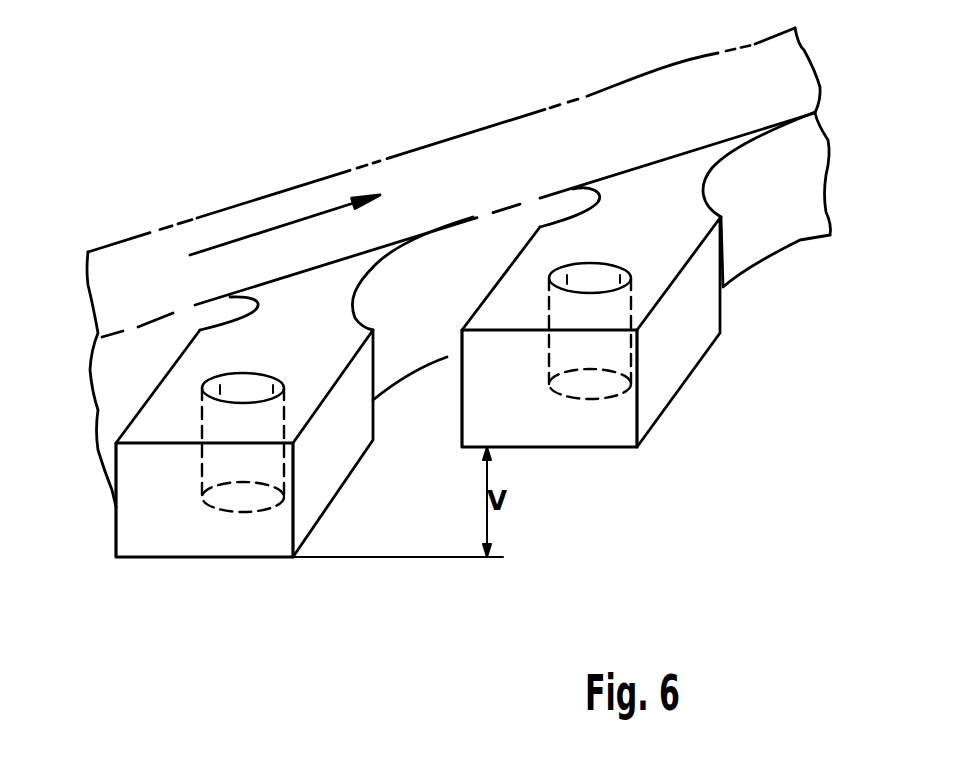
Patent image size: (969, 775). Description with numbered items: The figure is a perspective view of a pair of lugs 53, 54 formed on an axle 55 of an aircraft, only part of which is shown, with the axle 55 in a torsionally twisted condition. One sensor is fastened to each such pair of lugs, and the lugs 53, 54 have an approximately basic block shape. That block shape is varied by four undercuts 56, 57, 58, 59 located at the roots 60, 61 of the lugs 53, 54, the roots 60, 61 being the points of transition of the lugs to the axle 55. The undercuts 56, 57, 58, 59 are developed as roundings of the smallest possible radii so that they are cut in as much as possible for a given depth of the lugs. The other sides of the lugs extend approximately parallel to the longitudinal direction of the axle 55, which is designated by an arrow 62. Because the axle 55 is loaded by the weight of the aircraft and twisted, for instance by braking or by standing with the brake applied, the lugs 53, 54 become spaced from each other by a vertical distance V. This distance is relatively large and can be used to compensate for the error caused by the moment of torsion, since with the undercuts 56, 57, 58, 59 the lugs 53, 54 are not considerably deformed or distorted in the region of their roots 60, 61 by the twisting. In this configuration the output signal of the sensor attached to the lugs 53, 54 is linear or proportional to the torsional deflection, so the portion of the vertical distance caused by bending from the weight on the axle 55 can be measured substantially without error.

The lug 53 is at (310, 512).
The lug 54 is at (655, 403).
The axle 55 is at (807, 215).
The undercut 56 is at (218, 314).
The undercut 57 is at (383, 300).
The undercut 58 is at (568, 207).
The undercut 59 is at (745, 220).
The root 60 is at (303, 300).
The root 61 is at (663, 188).
The arrow 62 is at (213, 247).